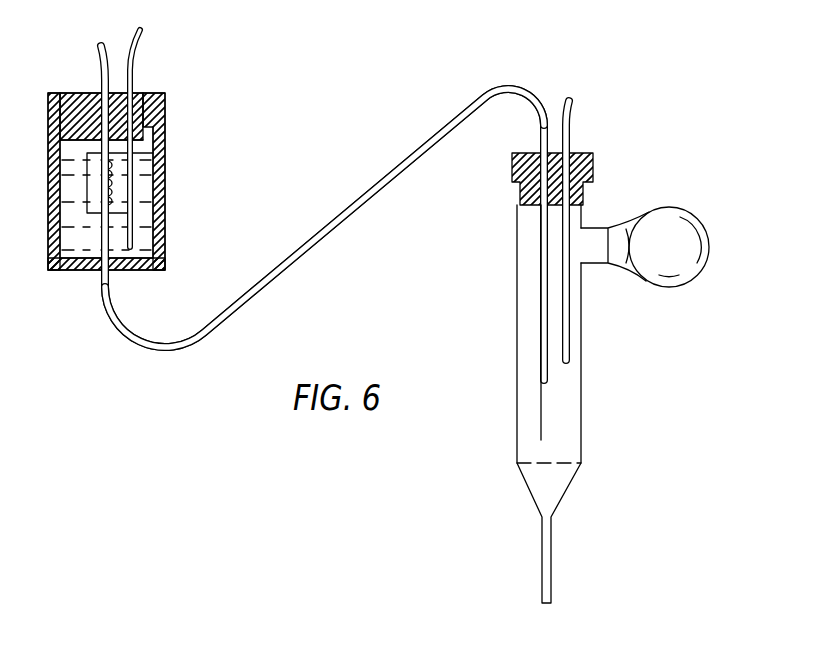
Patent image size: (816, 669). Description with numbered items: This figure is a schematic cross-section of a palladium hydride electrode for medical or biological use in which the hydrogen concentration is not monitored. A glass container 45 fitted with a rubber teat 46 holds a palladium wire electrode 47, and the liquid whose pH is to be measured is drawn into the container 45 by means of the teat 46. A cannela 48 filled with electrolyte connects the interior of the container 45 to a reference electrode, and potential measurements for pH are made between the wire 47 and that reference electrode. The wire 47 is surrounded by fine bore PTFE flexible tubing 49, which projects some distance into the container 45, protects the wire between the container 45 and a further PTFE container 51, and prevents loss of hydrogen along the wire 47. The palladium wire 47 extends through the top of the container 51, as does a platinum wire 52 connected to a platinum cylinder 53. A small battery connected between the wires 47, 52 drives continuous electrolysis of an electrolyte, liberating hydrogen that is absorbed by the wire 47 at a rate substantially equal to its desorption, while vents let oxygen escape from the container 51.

The glass container 45 is at (582, 425).
The rubber teat 46 is at (672, 207).
The palladium wire electrode 47 is at (109, 240).
The cannela 48 is at (572, 133).
The fine bore PTFE flexible tubing 49 is at (376, 186).
The PTFE container 51 is at (66, 270).
The platinum wire 52 is at (132, 63).
The platinum cylinder 53 is at (131, 183).